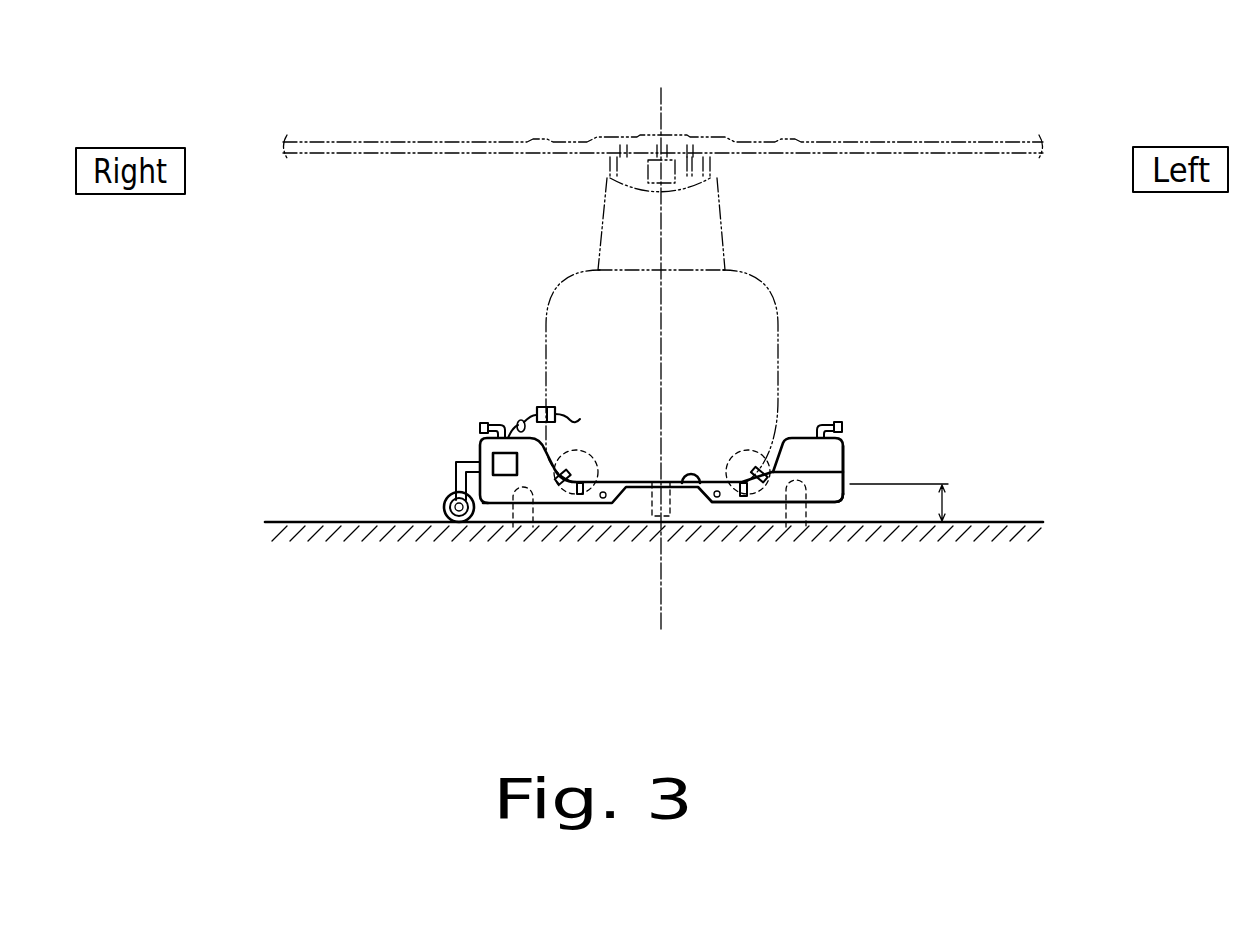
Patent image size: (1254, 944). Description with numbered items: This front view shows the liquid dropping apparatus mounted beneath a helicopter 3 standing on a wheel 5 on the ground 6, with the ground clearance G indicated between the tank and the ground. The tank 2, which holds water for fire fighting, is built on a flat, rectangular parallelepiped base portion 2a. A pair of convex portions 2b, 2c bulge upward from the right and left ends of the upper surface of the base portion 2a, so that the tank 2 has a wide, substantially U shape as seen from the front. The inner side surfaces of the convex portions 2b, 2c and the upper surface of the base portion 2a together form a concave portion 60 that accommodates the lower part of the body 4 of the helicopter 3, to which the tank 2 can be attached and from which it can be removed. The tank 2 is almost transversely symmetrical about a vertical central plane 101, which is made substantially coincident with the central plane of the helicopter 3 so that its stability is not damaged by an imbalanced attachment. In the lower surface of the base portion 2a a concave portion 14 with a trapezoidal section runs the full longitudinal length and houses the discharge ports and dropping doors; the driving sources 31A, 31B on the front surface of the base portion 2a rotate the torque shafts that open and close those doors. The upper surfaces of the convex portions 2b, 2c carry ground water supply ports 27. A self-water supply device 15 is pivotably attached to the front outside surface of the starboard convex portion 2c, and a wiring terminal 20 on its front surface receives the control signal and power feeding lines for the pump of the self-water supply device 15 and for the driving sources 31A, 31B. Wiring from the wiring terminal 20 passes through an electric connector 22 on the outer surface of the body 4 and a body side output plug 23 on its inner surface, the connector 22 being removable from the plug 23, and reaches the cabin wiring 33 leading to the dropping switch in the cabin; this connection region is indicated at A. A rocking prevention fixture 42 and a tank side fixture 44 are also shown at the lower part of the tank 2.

The vertical central plane 101 is at (662, 106).
The helicopter 3 is at (834, 344).
The body 4 is at (764, 291).
The ground 6 is at (294, 522).
The concave portion 14 is at (646, 505).
The concave portion 60 is at (690, 500).
The wiring terminal 20 is at (479, 461).
The convex portion 2c is at (478, 449).
The self-water supply device 15 is at (456, 467).
The body side output plug 23 is at (540, 403).
The cabin wiring 33 is at (545, 406).
The electric connector 22 is at (525, 418).
The region A is at (592, 460).
The driving source 31B is at (598, 500).
The driving source 31A is at (718, 510).
The tank side fixture 44 is at (578, 515).
The rocking prevention fixture 42 is at (556, 512).
The wheel 5 is at (527, 512).
The tank 2 is at (873, 406).
The convex portion 2b is at (830, 453).
The base portion 2a is at (835, 482).
The ground water supply port 27 is at (830, 424).
The ground clearance G is at (913, 502).